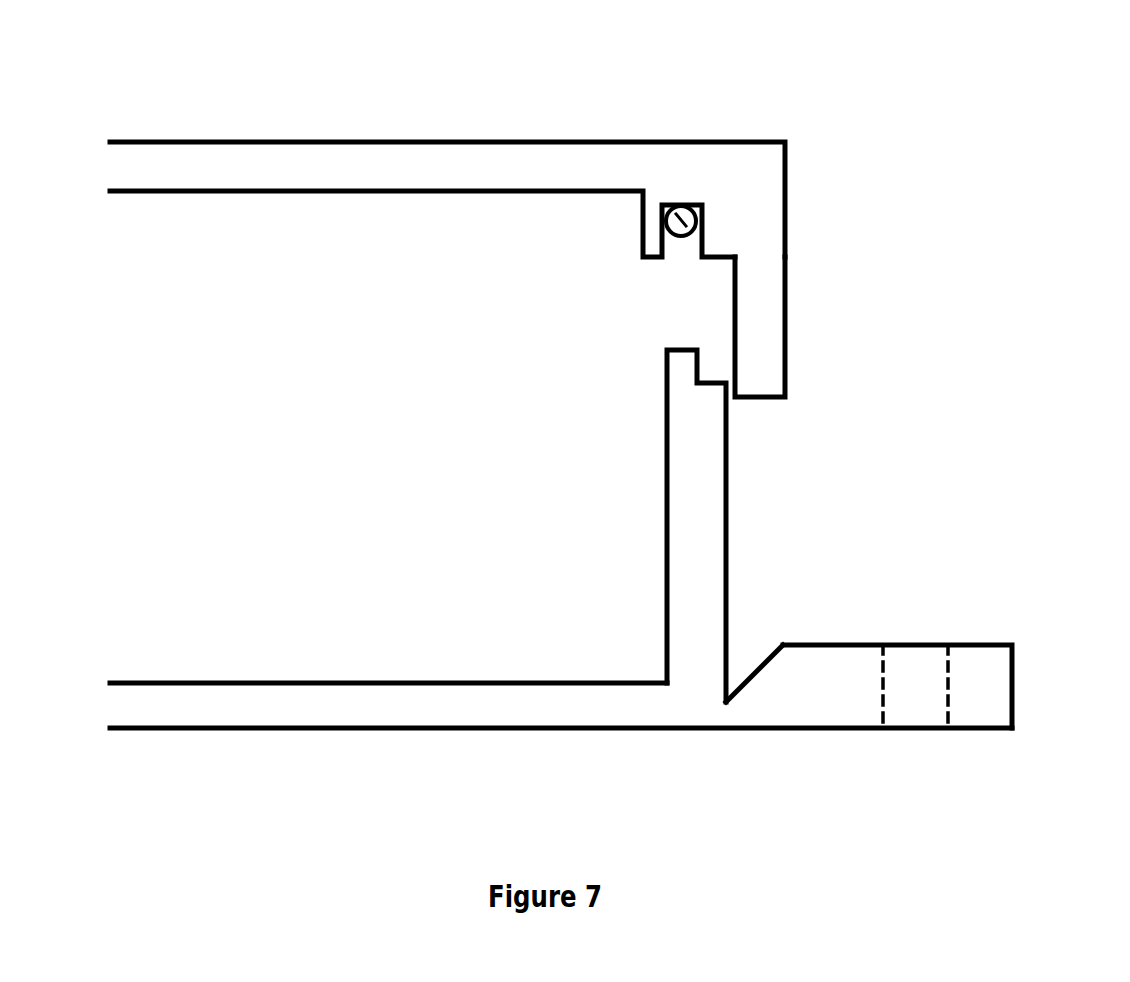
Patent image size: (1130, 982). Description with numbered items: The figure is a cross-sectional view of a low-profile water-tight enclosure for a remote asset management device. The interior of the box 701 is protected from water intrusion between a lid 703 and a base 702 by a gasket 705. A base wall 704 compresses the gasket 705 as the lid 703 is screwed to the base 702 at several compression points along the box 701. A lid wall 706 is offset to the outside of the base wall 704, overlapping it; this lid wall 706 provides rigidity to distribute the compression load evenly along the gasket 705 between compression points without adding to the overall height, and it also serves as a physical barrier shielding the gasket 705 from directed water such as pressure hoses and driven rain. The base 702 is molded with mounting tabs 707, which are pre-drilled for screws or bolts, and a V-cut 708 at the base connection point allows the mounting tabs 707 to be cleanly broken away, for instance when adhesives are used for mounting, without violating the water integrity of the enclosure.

The box 701 is at (263, 423).
The base 702 is at (585, 698).
The lid 703 is at (492, 168).
The base wall 704 is at (685, 450).
The gasket 705 is at (700, 207).
The lid wall 706 is at (752, 358).
The mounting tabs 707 is at (965, 687).
The V-cut 708 is at (742, 650).